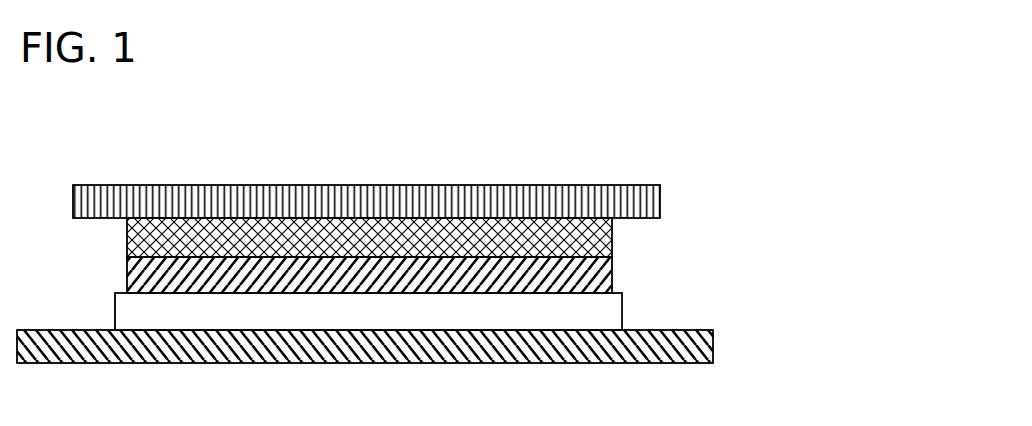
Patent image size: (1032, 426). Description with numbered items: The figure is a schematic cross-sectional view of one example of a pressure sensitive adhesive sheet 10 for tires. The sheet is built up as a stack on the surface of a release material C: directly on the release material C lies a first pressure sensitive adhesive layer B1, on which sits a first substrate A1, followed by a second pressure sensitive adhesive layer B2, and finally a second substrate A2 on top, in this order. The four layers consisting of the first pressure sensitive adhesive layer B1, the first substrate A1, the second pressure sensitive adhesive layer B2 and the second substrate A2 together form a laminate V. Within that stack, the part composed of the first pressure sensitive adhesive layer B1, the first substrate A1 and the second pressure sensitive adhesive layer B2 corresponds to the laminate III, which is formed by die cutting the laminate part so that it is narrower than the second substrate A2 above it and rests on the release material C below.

The pressure sensitive adhesive sheet for tires 10 is at (600, 173).
The second substrate A2 is at (643, 203).
The second pressure sensitive adhesive layer B2 is at (587, 242).
The first substrate A1 is at (587, 278).
The first pressure sensitive adhesive layer B1 is at (585, 315).
The release material C is at (703, 352).
The laminate III is at (803, 227).
The laminate V is at (872, 188).